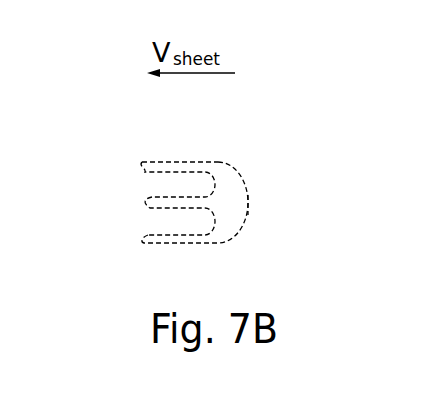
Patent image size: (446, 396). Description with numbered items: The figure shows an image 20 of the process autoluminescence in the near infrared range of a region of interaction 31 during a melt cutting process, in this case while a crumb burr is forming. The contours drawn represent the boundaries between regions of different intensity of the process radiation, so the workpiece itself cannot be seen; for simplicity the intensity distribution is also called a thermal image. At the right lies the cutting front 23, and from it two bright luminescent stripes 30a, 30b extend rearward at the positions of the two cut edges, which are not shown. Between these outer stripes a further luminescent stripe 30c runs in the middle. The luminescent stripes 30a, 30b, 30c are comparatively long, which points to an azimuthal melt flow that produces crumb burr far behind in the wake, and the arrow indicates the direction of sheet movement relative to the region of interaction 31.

The image 20 is at (112, 128).
The luminescent stripe 30a is at (163, 161).
The luminescent stripe 30b is at (152, 245).
The further luminescent stripe 30c is at (142, 199).
The region of interaction 31 is at (249, 188).
The cutting front 23 is at (268, 214).